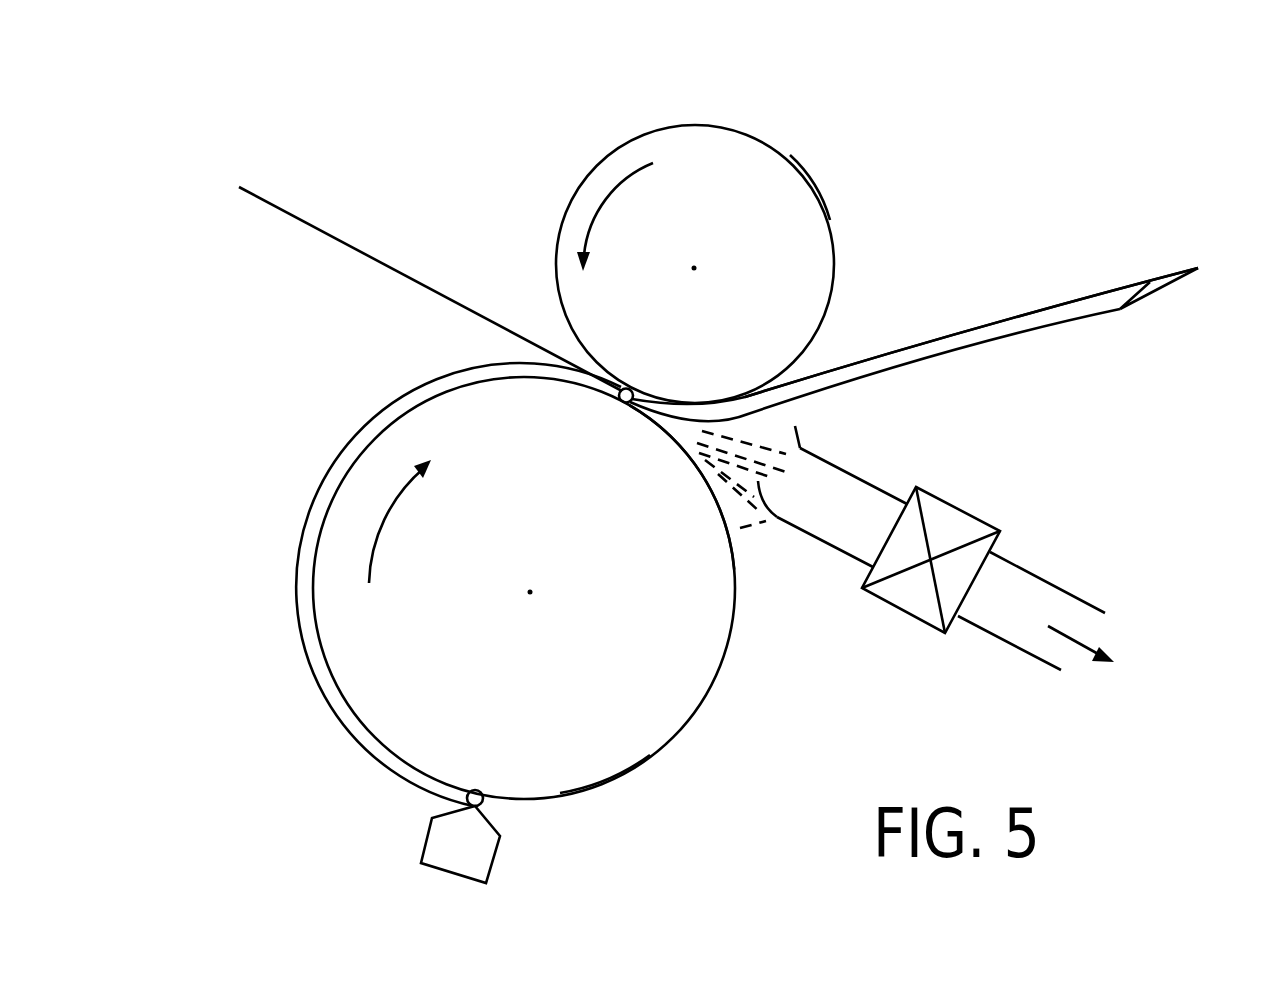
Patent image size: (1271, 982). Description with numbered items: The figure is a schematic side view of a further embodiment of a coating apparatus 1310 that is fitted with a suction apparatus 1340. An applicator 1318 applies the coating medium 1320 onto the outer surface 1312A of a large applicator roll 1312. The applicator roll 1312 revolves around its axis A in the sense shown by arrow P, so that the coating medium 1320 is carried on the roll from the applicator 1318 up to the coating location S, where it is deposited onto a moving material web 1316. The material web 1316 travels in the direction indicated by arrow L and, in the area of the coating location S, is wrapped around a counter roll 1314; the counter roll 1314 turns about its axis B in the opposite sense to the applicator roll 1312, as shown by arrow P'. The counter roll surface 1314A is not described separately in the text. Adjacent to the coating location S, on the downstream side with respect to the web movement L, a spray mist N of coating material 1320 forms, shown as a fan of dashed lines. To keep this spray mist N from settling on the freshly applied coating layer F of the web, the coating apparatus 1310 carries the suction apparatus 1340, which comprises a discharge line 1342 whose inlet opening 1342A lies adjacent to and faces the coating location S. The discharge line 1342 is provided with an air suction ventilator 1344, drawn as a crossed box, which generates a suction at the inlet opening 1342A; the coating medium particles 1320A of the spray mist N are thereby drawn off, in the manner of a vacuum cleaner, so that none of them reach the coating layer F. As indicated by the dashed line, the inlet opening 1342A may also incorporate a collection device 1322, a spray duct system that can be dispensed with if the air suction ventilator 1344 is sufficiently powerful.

The coating apparatus 1310 is at (1056, 157).
The applicator roll 1312 is at (670, 700).
The outer surface of applicator roll 1312A is at (612, 785).
The counter roll 1314 is at (758, 167).
The pressure roller surface 1314A is at (819, 185).
The material web 1316 is at (290, 213).
The applicator 1318 is at (434, 829).
The coating medium 1320 is at (305, 598).
The coating medium particles 1320A is at (755, 491).
The collection device 1322 is at (796, 412).
The suction apparatus 1340 is at (1068, 542).
The discharge line 1342 is at (882, 487).
The inlet opening 1342A is at (787, 487).
The air suction ventilator 1344 is at (930, 615).
The axis of applicator roll A is at (530, 592).
The axis of counter roll B is at (694, 268).
The coating layer F is at (1042, 311).
The direction of web movement L is at (1152, 290).
The spray mist N is at (777, 517).
The direction of rotation of applicator roll P is at (404, 521).
The direction of rotation of counter roll P' is at (626, 217).
The coating location S is at (623, 404).